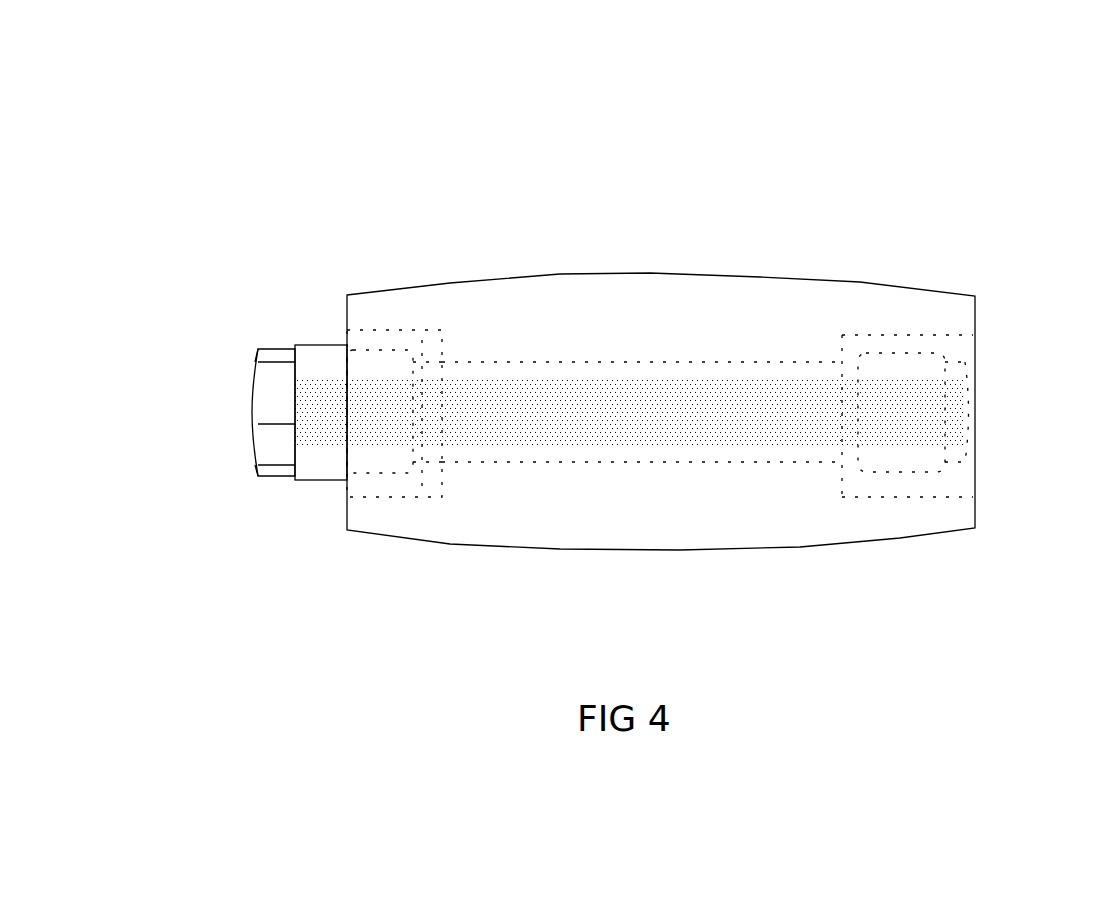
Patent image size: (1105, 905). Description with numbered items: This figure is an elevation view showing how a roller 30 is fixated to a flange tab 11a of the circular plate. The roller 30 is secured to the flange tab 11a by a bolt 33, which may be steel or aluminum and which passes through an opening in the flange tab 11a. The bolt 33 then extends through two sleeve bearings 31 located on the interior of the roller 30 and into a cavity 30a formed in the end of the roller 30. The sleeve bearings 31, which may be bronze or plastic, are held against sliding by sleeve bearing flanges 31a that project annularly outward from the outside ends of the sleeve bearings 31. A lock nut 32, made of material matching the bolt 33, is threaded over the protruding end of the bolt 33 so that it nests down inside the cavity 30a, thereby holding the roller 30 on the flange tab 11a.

The flange tab 11a is at (315, 342).
The roller 30 is at (685, 550).
The cavity 30a is at (635, 339).
The sleeve bearing 31 is at (787, 348).
The sleeve bearing flange 31a is at (845, 331).
The lock nut 32 is at (369, 334).
The bolt 33 is at (236, 347).